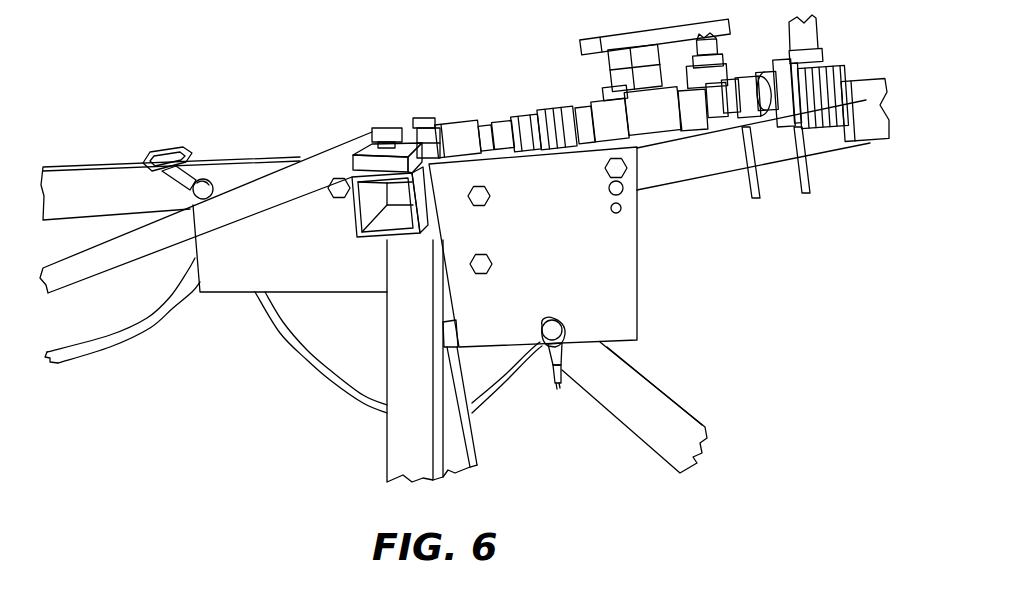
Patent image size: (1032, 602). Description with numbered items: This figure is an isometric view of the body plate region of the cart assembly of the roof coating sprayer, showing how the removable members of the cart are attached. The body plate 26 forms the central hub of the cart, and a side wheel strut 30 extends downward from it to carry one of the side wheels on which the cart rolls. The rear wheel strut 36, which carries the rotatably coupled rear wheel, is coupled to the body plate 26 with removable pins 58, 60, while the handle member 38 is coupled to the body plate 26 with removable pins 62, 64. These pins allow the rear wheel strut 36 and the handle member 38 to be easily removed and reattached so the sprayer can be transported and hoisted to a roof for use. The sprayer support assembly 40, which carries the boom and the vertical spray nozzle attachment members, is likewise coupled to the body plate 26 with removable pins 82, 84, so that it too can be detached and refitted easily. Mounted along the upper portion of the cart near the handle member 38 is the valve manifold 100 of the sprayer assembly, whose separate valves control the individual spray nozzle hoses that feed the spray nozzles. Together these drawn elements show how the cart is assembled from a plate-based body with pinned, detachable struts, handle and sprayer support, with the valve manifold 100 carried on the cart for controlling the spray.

The body plate 26 is at (565, 301).
The side wheel strut 30 is at (397, 448).
The rear wheel strut 36 is at (660, 417).
The handle member 38 is at (703, 155).
The sprayer support assembly 40 is at (103, 185).
The removable pin 58 is at (560, 323).
The removable pin 60 is at (492, 257).
The removable pin 62 is at (627, 172).
The removable pin 64 is at (492, 195).
The removable pin 82 is at (333, 200).
The removable pin 84 is at (205, 187).
The valve manifold 100 is at (833, 150).